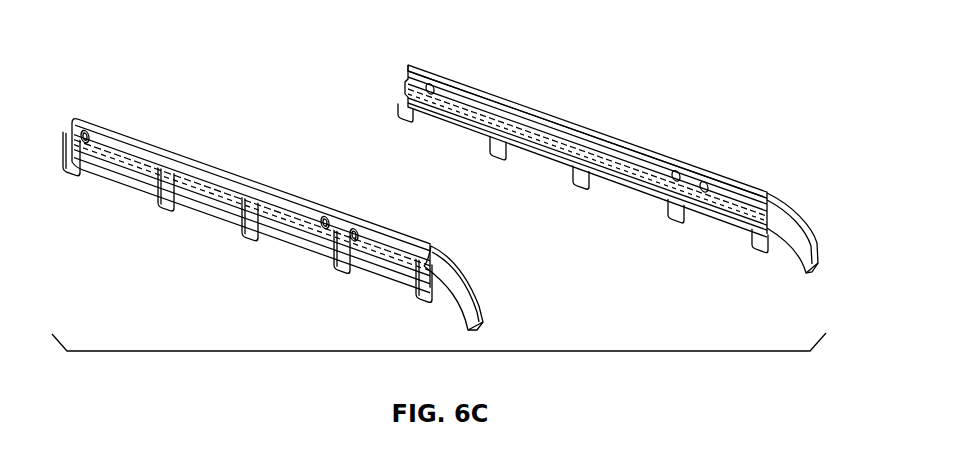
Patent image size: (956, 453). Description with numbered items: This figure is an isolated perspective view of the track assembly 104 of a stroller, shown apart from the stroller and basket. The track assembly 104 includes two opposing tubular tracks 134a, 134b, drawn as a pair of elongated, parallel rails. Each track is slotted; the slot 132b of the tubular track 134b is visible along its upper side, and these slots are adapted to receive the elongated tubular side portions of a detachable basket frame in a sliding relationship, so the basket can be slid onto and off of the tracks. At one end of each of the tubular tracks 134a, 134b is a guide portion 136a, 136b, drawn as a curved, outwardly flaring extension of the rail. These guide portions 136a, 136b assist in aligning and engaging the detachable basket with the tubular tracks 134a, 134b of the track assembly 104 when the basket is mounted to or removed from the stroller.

The track assembly 104 is at (588, 157).
The slot 132b is at (402, 97).
The tubular track 134a is at (378, 273).
The tubular track 134b is at (713, 227).
The guide portion 136a is at (468, 289).
The guide portion 136b is at (800, 227).